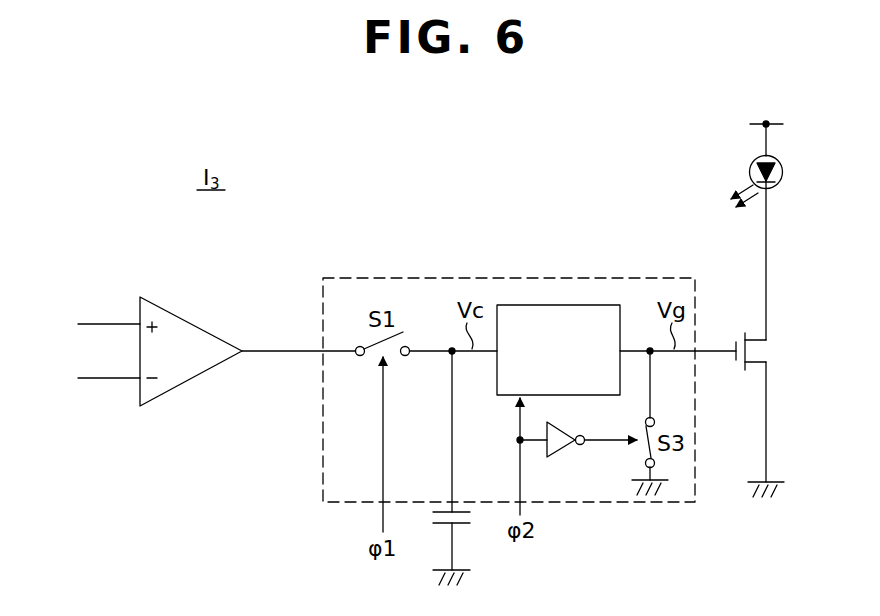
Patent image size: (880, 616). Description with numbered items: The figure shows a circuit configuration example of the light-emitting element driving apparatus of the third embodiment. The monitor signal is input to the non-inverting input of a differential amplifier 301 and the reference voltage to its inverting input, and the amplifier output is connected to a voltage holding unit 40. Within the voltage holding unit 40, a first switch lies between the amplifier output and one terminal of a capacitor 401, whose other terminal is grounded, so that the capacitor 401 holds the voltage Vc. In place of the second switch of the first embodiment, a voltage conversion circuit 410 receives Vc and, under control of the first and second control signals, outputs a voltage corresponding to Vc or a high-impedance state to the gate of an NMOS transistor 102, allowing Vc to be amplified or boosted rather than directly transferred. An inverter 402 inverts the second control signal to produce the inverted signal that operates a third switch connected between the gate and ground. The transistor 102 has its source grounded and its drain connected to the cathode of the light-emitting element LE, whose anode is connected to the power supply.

The differential amplifier 301 is at (190, 379).
The voltage holding unit 40 is at (414, 277).
The capacitor 401 is at (467, 537).
The voltage conversion circuit 410 is at (570, 305).
The inverter 402 is at (563, 452).
The NMOS transistor 102 is at (773, 351).
The light-emitting element LE is at (784, 172).